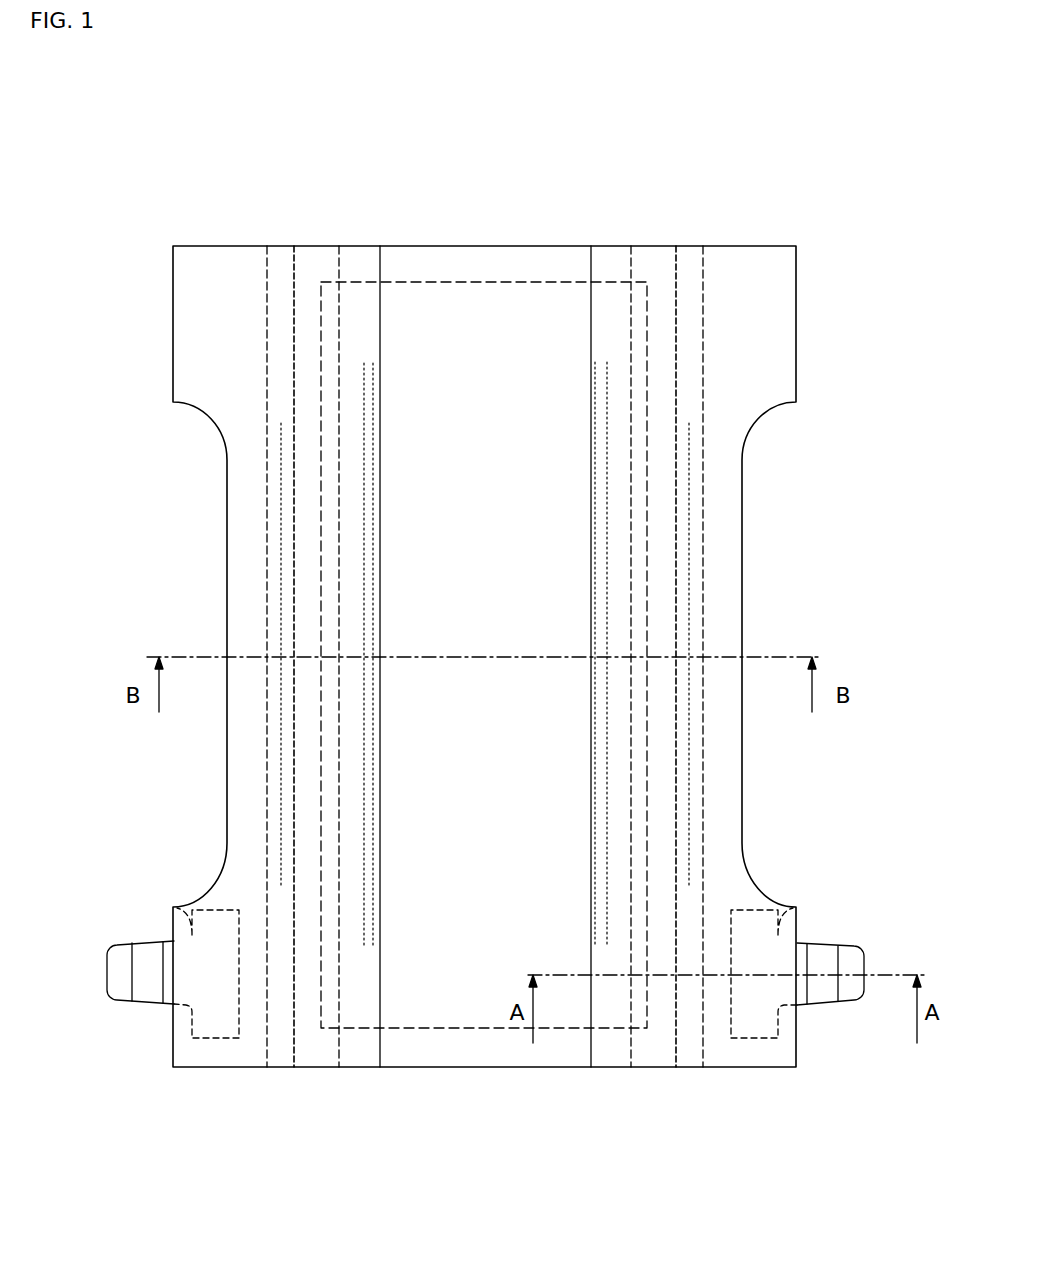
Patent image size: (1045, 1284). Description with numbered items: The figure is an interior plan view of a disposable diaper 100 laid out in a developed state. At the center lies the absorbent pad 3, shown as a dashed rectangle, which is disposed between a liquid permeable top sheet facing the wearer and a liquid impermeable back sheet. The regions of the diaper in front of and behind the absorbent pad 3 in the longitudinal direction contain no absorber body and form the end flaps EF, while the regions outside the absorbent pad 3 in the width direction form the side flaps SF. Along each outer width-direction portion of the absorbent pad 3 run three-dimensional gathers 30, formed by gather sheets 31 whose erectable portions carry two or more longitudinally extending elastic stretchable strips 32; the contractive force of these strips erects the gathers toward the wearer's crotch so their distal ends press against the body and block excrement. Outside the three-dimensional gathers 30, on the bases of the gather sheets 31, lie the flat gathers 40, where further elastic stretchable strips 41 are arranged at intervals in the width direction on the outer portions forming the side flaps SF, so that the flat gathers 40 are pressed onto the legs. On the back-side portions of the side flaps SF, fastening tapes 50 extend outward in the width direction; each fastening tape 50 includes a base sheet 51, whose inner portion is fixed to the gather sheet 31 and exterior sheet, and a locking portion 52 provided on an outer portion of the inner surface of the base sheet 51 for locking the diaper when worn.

The disposable diaper 100 is at (286, 222).
The absorbent pad 3 is at (427, 295).
The three-dimensional gathers 30 is at (582, 497).
The gather sheets 31 is at (615, 423).
The elastic stretchable strips 32 is at (610, 577).
The flat gathers 40 is at (738, 547).
The elastic stretchable strips 41 is at (688, 603).
The fastening tapes 50 is at (122, 1020).
The base sheet 51 is at (113, 983).
The locking portion 52 is at (150, 990).
The end flaps EF is at (485, 258).
The side flaps SF is at (192, 324).